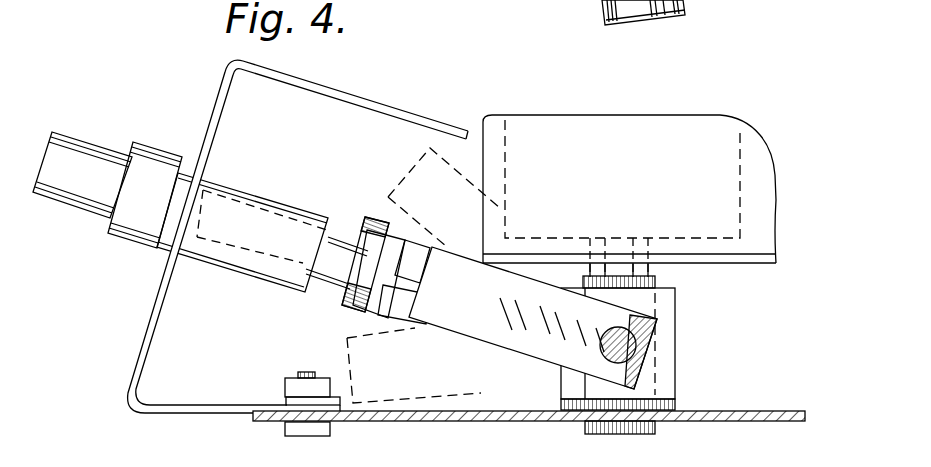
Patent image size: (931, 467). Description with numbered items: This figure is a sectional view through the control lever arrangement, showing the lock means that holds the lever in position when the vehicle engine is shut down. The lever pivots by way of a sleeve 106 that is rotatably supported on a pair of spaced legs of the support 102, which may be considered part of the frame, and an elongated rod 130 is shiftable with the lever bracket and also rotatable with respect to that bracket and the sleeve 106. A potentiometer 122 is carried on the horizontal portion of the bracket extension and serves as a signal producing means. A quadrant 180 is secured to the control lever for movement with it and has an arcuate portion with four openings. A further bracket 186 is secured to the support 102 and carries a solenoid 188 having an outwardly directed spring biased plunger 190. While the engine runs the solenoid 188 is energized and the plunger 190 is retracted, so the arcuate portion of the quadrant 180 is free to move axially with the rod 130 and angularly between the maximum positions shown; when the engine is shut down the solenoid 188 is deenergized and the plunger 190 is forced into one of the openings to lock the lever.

The support 102 is at (692, 411).
The sleeve 106 is at (585, 428).
The potentiometer 122 is at (682, 12).
The elongated rod 130 is at (637, 320).
The quadrant 180 is at (461, 262).
The bracket 186 is at (221, 70).
The solenoid 188 is at (238, 194).
The spring biased plunger 190 is at (333, 243).